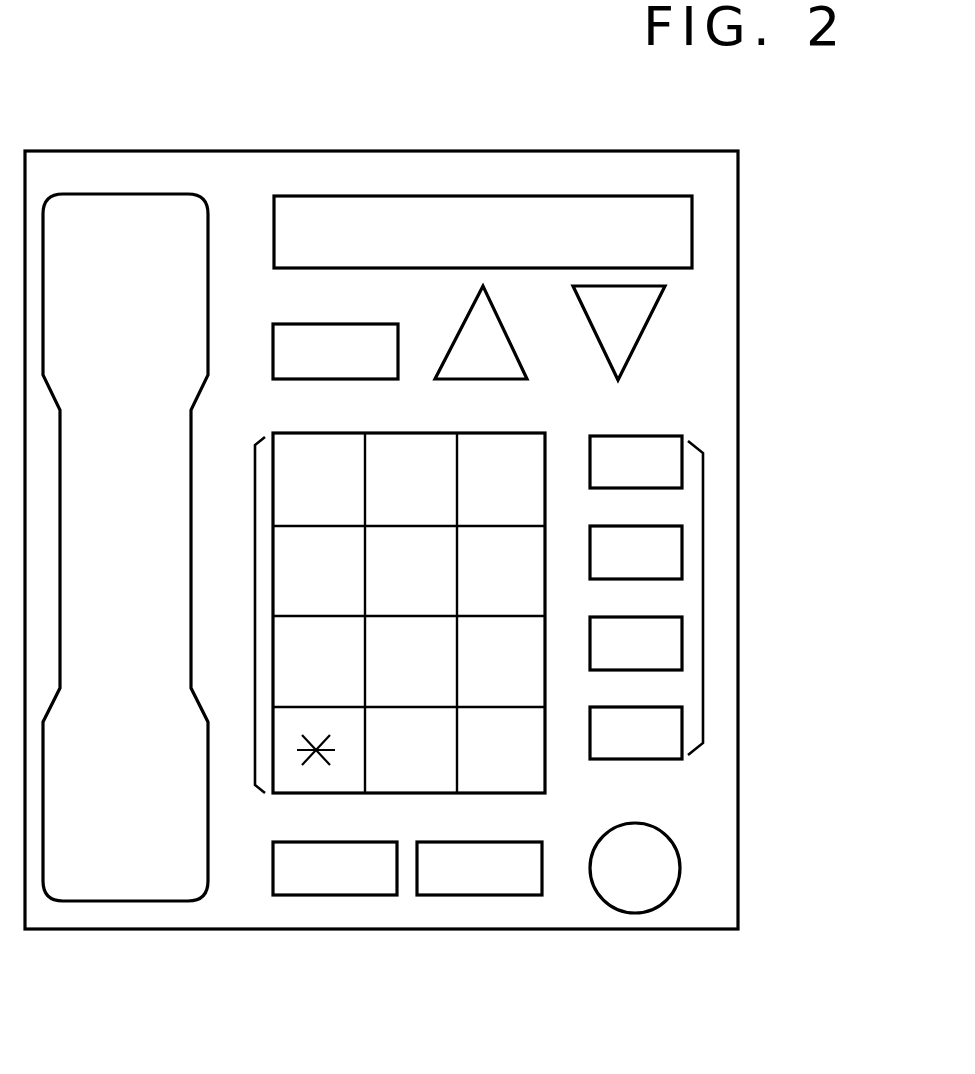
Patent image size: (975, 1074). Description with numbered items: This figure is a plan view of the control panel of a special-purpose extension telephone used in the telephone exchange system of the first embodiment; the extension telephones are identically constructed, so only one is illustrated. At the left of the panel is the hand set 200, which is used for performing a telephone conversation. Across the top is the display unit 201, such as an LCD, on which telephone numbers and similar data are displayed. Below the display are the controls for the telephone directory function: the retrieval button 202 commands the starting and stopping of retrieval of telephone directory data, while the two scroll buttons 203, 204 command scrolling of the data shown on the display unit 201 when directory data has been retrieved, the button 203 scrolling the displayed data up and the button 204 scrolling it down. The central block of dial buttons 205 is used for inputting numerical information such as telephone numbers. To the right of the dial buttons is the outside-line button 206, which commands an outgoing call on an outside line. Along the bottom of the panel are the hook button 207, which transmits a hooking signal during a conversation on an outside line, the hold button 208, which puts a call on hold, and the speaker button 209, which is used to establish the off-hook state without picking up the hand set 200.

The hand set 200 is at (148, 194).
The display unit 201 is at (593, 196).
The retrieval button 202 is at (327, 324).
The button 203 is at (515, 360).
The button 204 is at (640, 340).
The dial buttons 205 is at (253, 512).
The outside-line button 206 is at (703, 633).
The hook button 207 is at (333, 895).
The hold button 208 is at (478, 895).
The speaker button 209 is at (637, 913).